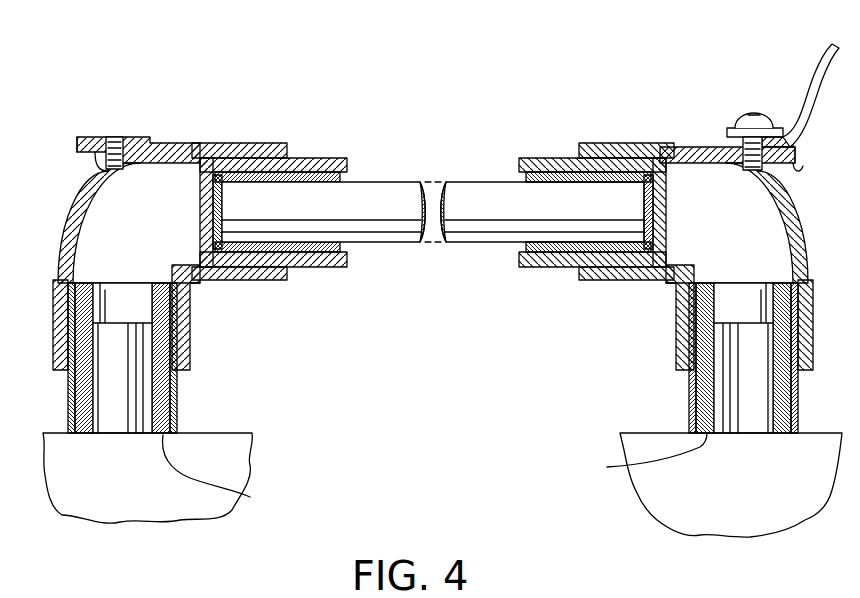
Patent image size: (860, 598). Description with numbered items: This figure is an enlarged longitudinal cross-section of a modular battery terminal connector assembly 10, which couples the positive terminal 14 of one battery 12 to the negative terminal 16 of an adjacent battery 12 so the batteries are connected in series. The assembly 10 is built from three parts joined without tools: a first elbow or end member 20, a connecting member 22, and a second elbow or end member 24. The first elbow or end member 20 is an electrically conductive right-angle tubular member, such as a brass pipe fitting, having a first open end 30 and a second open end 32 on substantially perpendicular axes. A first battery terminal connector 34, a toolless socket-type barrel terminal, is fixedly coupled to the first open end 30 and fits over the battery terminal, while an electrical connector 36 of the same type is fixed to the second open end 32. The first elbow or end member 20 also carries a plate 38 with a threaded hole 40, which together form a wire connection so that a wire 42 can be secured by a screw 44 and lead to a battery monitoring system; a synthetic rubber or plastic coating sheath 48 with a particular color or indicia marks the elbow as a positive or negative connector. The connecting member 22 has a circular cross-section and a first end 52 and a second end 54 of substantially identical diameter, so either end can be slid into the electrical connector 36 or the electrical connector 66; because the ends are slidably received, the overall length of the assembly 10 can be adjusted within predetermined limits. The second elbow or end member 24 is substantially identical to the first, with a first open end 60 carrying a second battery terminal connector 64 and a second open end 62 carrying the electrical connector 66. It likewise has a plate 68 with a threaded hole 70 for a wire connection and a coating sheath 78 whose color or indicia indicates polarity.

The modular battery terminal connector assembly 10 is at (436, 222).
The battery 12 is at (240, 433).
The positive terminal 14 is at (722, 390).
The negative terminal 16 is at (135, 392).
The first elbow or end member 20 is at (684, 146).
The connecting member 22 is at (393, 173).
The second elbow or end member 24 is at (197, 147).
The first open end 30 is at (637, 457).
The second open end 32 is at (520, 240).
The first battery terminal connector 34 is at (797, 410).
The electrical connector 36 is at (528, 157).
The plate 38 is at (717, 136).
The threaded hole 40 is at (801, 166).
The wire 42 is at (812, 58).
The screw 44 is at (741, 112).
The coating sheath 48 is at (691, 258).
The first end 52 is at (655, 212).
The second end 54 is at (212, 214).
The first open end 60 is at (223, 474).
The second open end 62 is at (345, 277).
The second battery terminal connector 64 is at (70, 413).
The electrical connector 66 is at (333, 156).
The plate 68 is at (88, 135).
The threaded hole 70 is at (118, 132).
The coating sheath 78 is at (174, 253).